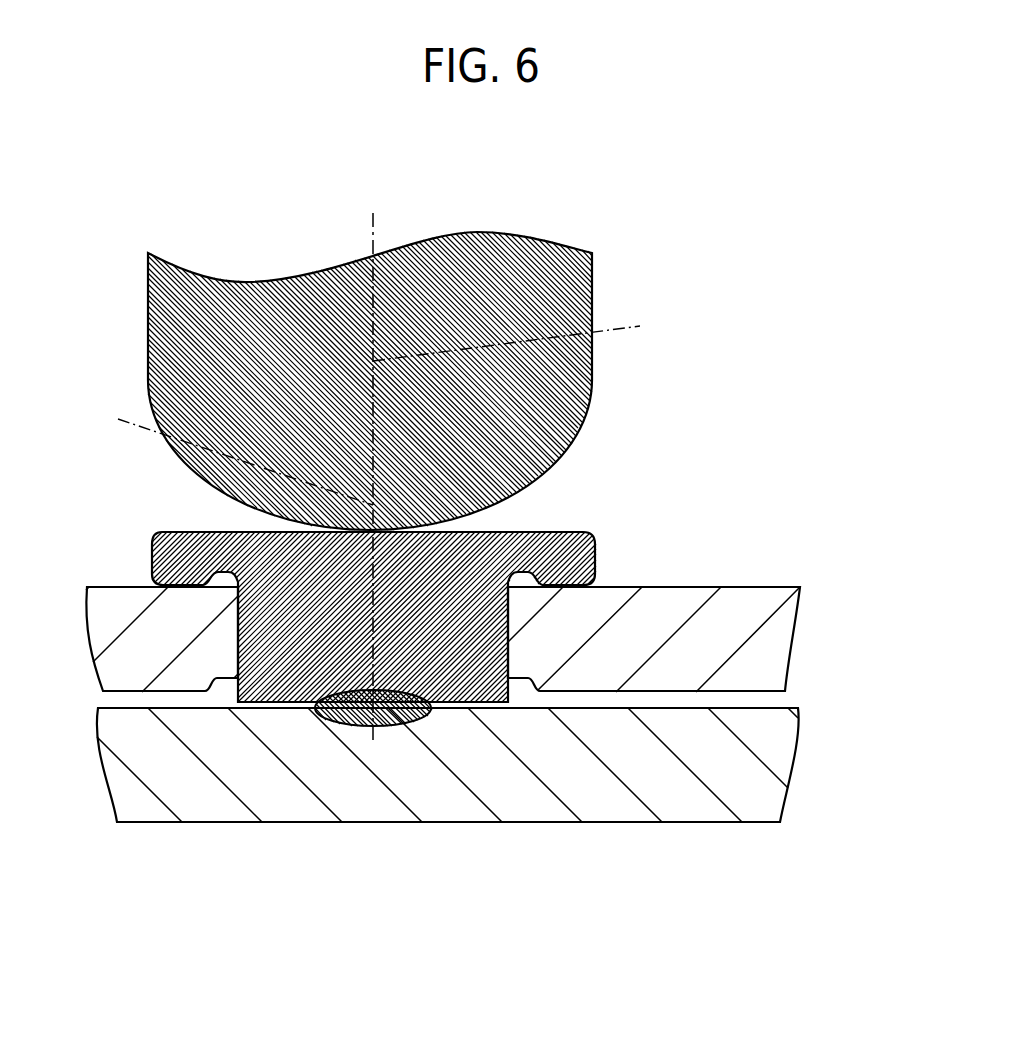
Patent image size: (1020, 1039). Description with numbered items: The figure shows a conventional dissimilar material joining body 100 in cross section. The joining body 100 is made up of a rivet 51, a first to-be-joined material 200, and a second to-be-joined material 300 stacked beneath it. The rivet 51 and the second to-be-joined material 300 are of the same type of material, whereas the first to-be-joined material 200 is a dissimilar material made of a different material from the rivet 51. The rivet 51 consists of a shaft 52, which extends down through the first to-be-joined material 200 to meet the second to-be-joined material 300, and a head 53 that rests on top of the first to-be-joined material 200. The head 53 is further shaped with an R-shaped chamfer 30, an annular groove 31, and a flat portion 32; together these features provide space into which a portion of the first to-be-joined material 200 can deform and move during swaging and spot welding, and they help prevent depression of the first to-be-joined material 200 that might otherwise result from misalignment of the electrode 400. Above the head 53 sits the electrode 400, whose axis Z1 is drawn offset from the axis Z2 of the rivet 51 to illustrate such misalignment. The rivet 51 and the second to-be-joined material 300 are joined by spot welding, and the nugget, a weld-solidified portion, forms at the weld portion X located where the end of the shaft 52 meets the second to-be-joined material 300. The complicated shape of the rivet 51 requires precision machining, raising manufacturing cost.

The electrode 400 is at (577, 435).
The dissimilar material joining body 100 is at (499, 618).
The rivet 51 is at (466, 558).
The shaft 52 is at (477, 632).
The head 53 is at (440, 500).
The R shaped chamfer 30 is at (152, 581).
The annular groove 31 is at (213, 571).
The flat portion 32 is at (157, 570).
The first to-be-joined material 200 is at (748, 673).
The second to-be-joined material 300 is at (486, 765).
The weld portion X is at (350, 723).
The axis of electrode Z1 is at (526, 336).
The axis of rivet Z2 is at (225, 453).